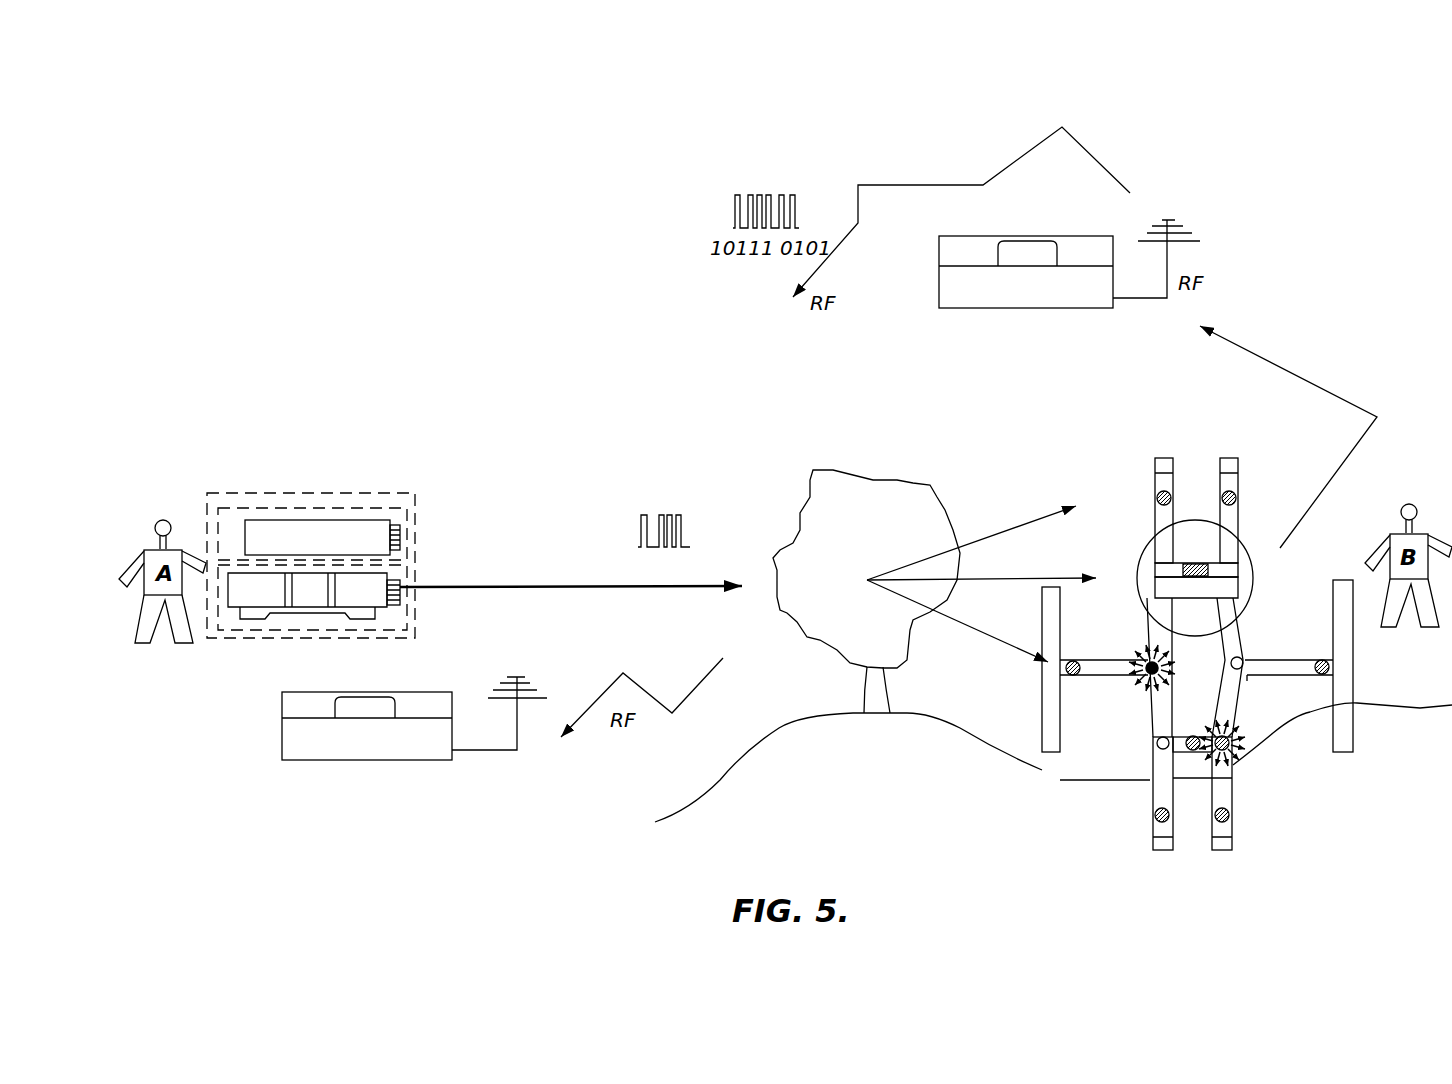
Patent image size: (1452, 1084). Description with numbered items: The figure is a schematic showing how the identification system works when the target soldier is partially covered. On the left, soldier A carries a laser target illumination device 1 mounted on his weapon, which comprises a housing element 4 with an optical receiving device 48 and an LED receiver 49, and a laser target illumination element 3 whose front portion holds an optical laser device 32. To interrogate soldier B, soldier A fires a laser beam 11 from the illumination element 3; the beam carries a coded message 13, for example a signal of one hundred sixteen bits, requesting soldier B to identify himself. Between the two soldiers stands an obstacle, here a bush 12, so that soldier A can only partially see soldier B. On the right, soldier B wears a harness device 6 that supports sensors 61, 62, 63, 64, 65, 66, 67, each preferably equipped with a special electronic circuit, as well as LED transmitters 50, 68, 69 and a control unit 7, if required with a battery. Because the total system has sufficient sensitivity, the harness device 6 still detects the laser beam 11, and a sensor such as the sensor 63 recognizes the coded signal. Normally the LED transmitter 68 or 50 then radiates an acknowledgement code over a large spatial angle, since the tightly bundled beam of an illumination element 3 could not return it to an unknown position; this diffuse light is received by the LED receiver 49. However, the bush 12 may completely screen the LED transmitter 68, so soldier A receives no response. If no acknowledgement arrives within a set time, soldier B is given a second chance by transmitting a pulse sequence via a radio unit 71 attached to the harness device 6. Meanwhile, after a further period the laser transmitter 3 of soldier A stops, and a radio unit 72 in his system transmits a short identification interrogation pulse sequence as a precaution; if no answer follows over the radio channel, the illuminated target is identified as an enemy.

The laser target illumination device 1 is at (238, 490).
The laser target illumination element 3 is at (281, 641).
The housing element 4 is at (250, 504).
The harness device 6 is at (1130, 463).
The control unit 7 is at (1245, 544).
The laser beam 11 is at (548, 582).
The bush 12 is at (847, 498).
The coded message 13 is at (670, 502).
The optical laser device 32 is at (393, 604).
The optical receiving device 48 is at (397, 527).
The LED receiver 49 is at (321, 533).
The LED transmitter 50 is at (1232, 733).
The sensor 61 is at (1230, 817).
The sensor 62 is at (1155, 817).
The sensor 63 is at (1072, 676).
The sensor 64 is at (1156, 496).
The sensor 65 is at (1236, 494).
The sensor 66 is at (1331, 665).
The sensor 67 is at (1180, 725).
The LED transmitter 68 is at (1143, 680).
The LED transmitter 69 is at (1243, 658).
The radio unit 71 is at (983, 293).
The radio unit 72 is at (376, 748).